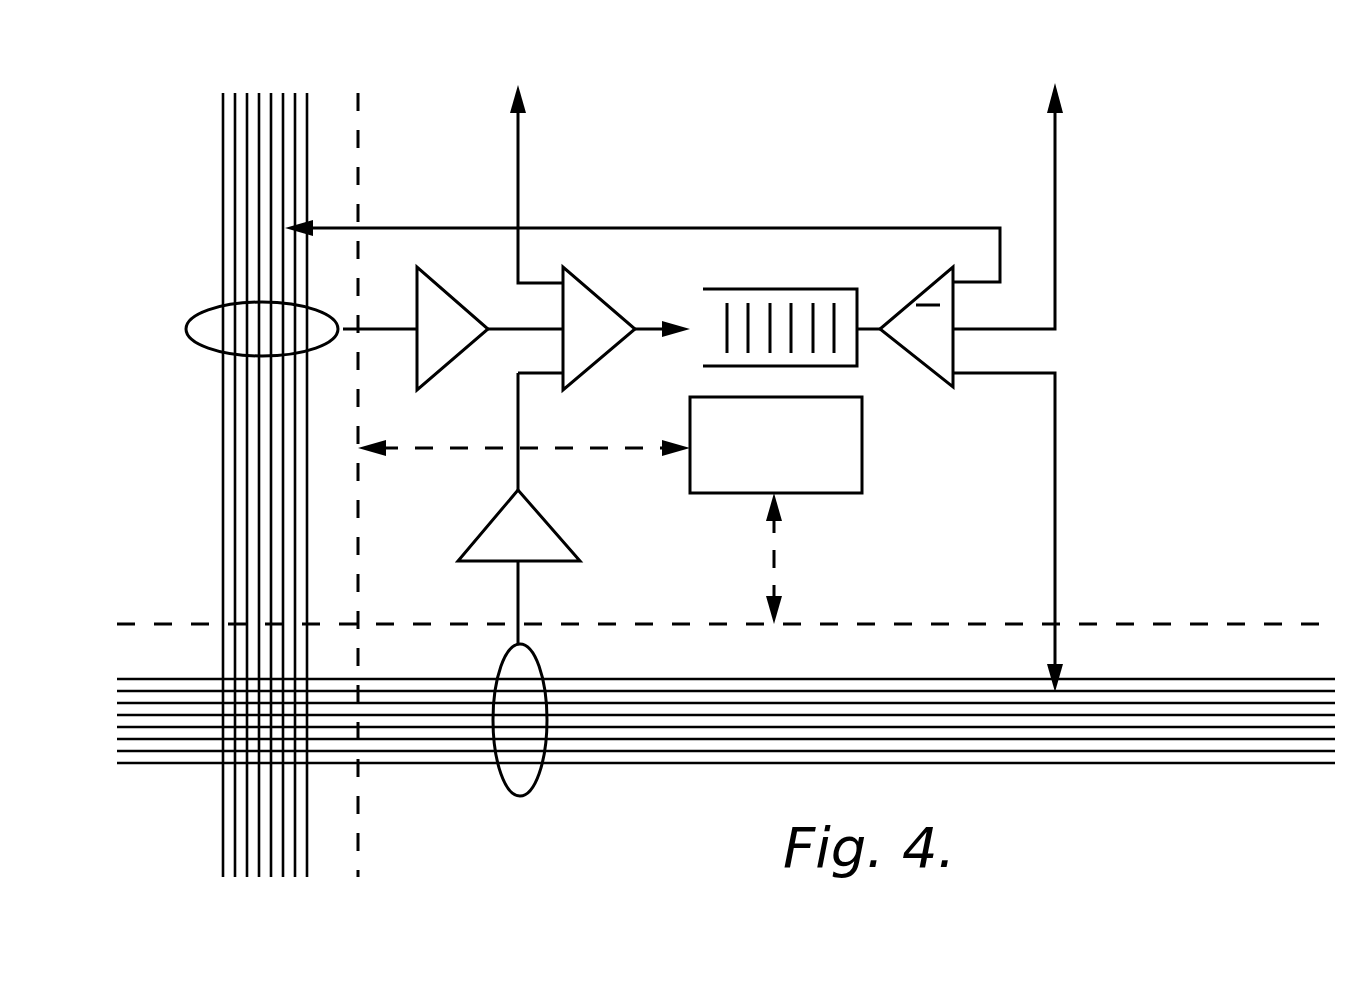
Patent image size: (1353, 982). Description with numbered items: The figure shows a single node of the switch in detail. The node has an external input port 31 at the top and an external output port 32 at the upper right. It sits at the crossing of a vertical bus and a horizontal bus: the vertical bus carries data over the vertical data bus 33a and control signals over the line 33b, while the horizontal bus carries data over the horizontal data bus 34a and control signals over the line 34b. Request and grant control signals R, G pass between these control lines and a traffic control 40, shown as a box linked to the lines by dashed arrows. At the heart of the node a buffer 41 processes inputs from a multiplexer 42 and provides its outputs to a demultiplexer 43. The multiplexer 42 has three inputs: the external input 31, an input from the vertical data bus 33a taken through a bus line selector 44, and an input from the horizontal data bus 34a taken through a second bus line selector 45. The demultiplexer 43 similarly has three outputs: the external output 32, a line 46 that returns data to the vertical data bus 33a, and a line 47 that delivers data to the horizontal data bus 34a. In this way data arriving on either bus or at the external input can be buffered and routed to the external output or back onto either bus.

The external input port 31 is at (522, 168).
The external output port 32 is at (1057, 178).
The vertical data bus 33a is at (248, 192).
The vertical control line 33b is at (360, 203).
The horizontal data bus 34a is at (197, 725).
The horizontal control line 34b is at (1115, 623).
The traffic control 40 is at (723, 460).
The buffer 41 is at (779, 317).
The multiplexer 42 is at (583, 302).
The demultiplexer 43 is at (928, 348).
The bus line selector 44 is at (435, 300).
The bus line selector 45 is at (513, 513).
The input to vertical data bus 46 is at (730, 226).
The input to horizontal data bus 47 is at (1052, 472).